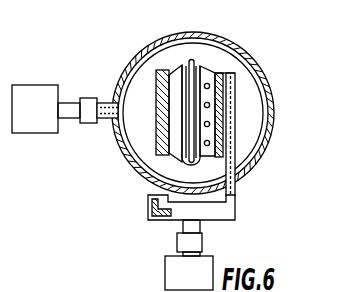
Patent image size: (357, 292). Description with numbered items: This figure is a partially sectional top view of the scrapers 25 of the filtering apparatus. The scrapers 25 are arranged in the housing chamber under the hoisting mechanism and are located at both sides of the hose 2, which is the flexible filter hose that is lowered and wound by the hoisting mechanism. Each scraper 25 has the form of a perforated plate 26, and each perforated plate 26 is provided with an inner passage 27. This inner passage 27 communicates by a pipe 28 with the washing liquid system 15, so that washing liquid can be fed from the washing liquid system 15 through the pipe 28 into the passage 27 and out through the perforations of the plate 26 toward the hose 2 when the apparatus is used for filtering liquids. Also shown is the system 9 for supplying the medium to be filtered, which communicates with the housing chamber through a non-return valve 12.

The hose 2 is at (192, 58).
The system for supplying the medium to be filtered 9 is at (28, 90).
The non-return valve 12 is at (87, 103).
The washing liquid system 15 is at (172, 271).
The scrapers 25 is at (160, 62).
The perforated plate 26 is at (207, 72).
The inner passage 27 is at (222, 114).
The pipe 28 is at (223, 212).